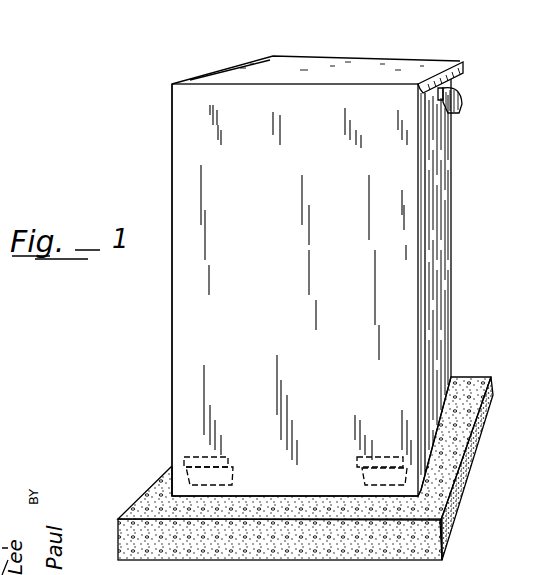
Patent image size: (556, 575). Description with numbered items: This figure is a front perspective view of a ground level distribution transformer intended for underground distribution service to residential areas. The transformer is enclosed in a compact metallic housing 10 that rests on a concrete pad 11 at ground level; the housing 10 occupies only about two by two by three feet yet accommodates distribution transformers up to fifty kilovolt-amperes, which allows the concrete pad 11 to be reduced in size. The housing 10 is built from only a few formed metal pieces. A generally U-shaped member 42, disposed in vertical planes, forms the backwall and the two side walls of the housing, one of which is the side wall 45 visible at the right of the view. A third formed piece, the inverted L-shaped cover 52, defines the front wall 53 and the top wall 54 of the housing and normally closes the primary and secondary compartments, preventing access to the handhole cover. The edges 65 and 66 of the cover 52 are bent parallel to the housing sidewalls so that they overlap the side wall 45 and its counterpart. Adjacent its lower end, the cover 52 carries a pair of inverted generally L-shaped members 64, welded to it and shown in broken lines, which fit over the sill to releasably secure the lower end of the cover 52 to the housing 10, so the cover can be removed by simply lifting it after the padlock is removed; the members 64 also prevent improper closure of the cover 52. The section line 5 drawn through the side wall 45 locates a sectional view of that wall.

The metallic housing 10 is at (150, 321).
The concrete pad 11 is at (162, 496).
The inverted L-shaped cover 52 is at (314, 55).
The front wall 53 is at (240, 353).
The top wall 54 is at (354, 72).
The edge of cover 65 is at (170, 148).
The U-shaped member 42 is at (455, 228).
The side wall 45 is at (437, 280).
The edge of cover 66 is at (422, 320).
The section line 5-5 / latch 5 is at (438, 62).
The inverted L-shaped members 64 is at (237, 470).